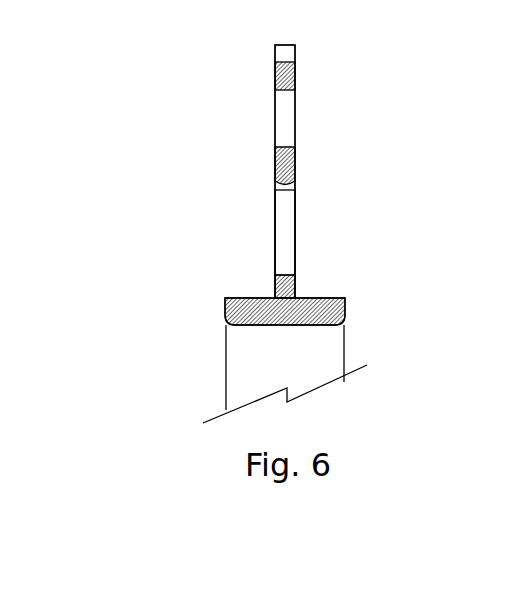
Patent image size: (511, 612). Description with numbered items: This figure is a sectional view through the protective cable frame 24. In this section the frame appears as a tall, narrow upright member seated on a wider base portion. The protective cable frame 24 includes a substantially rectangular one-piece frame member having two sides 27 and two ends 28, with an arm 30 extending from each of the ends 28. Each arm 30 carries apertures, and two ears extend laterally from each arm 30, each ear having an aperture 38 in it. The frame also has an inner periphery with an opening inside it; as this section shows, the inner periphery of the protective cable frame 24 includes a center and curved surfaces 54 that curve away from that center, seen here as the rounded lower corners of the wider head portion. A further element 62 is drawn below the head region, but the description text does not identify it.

The protective cable frame 24 is at (205, 88).
The side 27 is at (275, 165).
The end 28 is at (268, 298).
The arm 30 is at (295, 238).
The aperture 38 is at (295, 116).
The curved surface 54 is at (224, 322).
The base / mounting body 62 is at (284, 325).